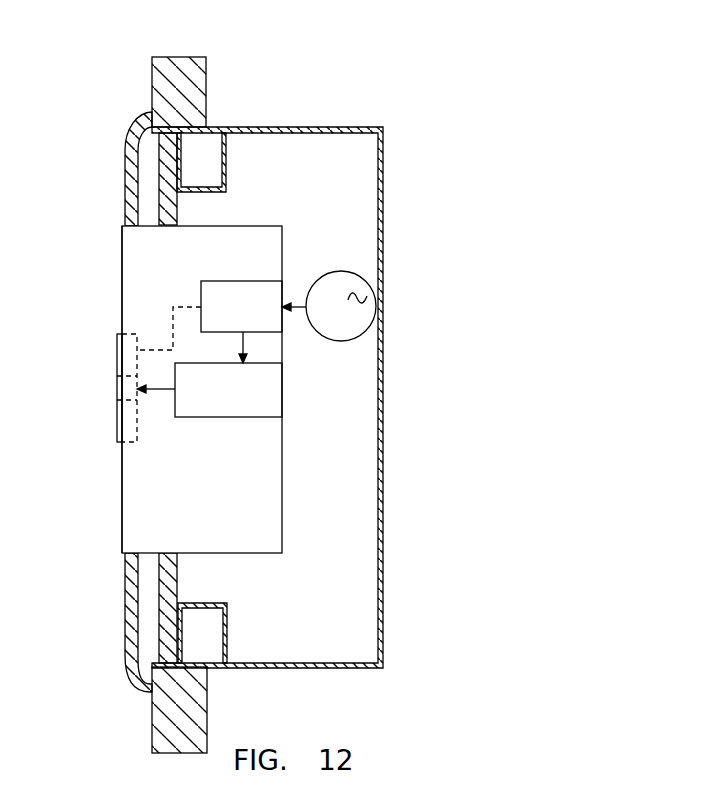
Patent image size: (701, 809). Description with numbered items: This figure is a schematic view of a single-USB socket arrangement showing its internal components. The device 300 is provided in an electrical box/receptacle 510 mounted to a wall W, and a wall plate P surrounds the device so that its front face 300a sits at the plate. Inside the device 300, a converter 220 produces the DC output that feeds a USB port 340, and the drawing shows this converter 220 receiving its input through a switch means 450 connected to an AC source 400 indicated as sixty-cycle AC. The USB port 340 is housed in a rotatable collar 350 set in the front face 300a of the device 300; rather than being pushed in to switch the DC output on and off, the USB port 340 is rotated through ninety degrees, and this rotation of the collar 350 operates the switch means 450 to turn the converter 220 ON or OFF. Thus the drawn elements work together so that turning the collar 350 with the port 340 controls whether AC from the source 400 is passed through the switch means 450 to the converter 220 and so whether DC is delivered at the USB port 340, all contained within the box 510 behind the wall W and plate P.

The device 300 is at (243, 225).
The front face 300a is at (122, 262).
The switch means 450 is at (228, 281).
The converter 220 is at (213, 417).
The AC power source 400 is at (335, 271).
The rotatable collar 350 is at (117, 347).
The USB port 340 is at (127, 400).
The electrical box/receptacle 510 is at (323, 127).
The wall W is at (153, 88).
The wall plate P is at (127, 618).